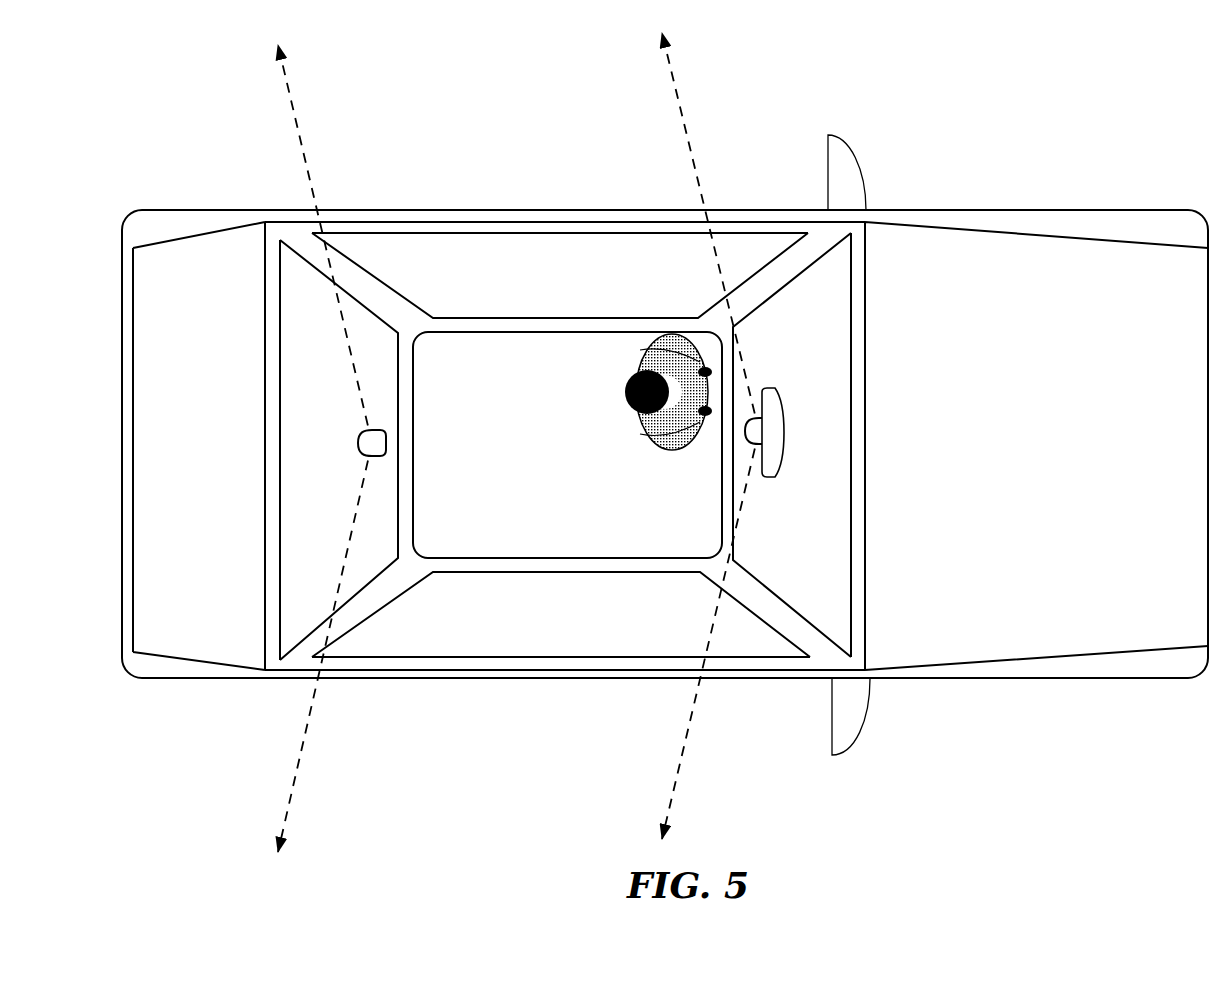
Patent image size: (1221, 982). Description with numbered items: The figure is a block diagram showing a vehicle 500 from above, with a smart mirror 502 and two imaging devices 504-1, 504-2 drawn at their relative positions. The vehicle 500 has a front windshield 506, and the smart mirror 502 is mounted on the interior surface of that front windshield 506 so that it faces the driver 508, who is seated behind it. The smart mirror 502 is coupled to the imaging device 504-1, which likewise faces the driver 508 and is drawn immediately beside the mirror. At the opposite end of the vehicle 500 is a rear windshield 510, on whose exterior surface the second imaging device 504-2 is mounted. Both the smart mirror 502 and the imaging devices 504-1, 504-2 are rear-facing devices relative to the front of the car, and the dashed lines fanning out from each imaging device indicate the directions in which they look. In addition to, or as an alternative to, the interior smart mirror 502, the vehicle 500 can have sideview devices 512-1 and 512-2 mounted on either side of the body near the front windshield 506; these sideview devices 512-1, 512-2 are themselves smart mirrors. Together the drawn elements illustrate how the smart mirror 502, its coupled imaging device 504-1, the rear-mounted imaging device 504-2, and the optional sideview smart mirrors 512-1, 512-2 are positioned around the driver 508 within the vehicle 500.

The vehicle 500 is at (978, 457).
The smart mirror 502 is at (768, 405).
The imaging device 504-1 is at (747, 437).
The imaging device 504-2 is at (386, 443).
The front windshield 506 is at (792, 326).
The driver 508 is at (665, 335).
The rear windshield 510 is at (303, 503).
The sideview device 512-1 is at (846, 140).
The sideview device 512-2 is at (853, 752).